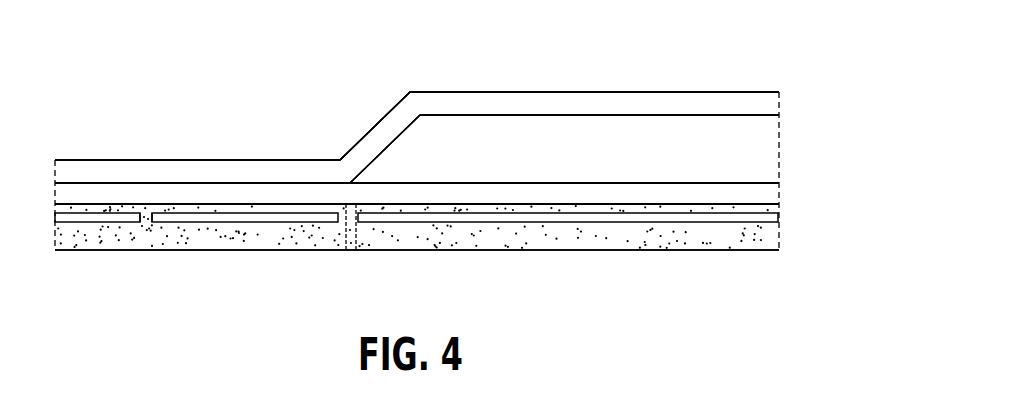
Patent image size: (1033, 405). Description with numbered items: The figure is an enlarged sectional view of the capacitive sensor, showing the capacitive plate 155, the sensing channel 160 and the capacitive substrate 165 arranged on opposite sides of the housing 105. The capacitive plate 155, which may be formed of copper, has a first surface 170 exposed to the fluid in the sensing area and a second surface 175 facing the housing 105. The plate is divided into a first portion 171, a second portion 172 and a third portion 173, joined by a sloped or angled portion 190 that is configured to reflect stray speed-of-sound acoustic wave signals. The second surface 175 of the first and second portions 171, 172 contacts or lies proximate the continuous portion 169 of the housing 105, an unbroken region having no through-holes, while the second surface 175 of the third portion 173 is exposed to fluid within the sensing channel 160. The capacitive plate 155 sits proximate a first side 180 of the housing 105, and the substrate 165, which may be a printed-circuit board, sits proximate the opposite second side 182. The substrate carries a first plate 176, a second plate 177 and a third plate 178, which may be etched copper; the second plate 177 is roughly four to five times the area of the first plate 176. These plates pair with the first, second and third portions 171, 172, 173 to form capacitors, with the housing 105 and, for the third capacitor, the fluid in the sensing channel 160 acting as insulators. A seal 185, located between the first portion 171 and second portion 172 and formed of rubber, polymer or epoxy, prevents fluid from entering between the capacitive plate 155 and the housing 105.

The housing 105 is at (755, 192).
The capacitive plate 155 is at (101, 128).
The sensing channel 160 is at (621, 130).
The capacitive substrate 165 is at (677, 243).
The continuous portion of the housing 169 is at (143, 195).
The first surface 170 is at (229, 160).
The first portion 171 is at (131, 125).
The second portion 172 is at (297, 100).
The third portion 173 is at (742, 80).
The second surface 175 is at (80, 183).
The first plate 176 is at (84, 216).
The second plate 177 is at (253, 217).
The third plate 178 is at (557, 217).
The first side 180 is at (418, 182).
The second side 182 is at (429, 210).
The seal 185 is at (351, 190).
The angled portion 190 is at (381, 117).